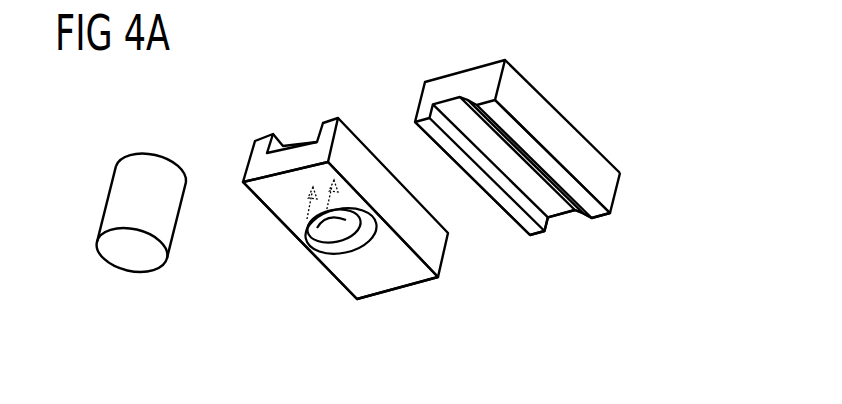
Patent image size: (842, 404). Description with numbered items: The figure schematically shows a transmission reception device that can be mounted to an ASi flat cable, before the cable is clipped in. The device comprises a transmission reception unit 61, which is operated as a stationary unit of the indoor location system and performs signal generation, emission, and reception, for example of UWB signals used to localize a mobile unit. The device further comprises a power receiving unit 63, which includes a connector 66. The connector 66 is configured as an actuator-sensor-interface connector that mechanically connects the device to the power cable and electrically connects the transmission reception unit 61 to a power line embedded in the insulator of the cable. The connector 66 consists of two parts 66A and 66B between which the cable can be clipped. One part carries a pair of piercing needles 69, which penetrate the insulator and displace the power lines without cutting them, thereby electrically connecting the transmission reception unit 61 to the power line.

The transmission reception unit 61 is at (121, 200).
The power receiving unit 63 is at (344, 72).
The connector 66 is at (590, 104).
The first connector part 66A is at (462, 298).
The second connector part 66B is at (582, 250).
The piercing needles 69 is at (293, 219).